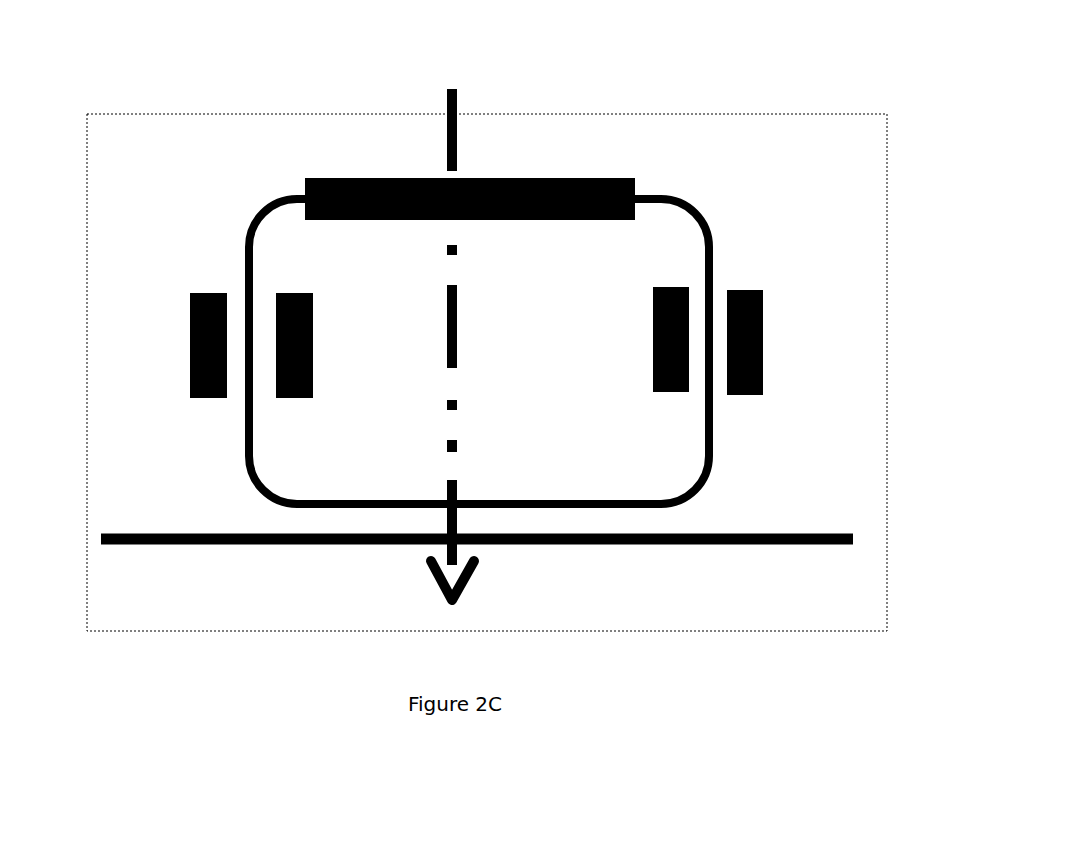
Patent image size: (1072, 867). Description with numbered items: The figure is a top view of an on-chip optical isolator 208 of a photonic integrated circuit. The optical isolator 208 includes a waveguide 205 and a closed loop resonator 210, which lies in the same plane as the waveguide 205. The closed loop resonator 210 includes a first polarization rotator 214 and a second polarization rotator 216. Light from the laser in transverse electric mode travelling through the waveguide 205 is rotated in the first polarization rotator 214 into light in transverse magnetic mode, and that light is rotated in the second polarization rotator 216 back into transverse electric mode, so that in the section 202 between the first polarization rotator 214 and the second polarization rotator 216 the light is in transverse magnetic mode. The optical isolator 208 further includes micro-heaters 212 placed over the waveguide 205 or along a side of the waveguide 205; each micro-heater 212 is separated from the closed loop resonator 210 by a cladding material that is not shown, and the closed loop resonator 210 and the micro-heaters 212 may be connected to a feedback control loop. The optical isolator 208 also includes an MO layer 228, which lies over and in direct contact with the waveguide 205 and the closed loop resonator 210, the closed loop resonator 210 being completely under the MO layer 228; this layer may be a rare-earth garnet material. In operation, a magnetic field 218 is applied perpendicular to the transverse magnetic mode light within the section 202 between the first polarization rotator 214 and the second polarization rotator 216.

The section 202 is at (477, 193).
The waveguide 205 is at (853, 537).
The on-chip optical isolator 208 is at (887, 283).
The closed loop resonator 210 is at (712, 455).
The micro-heaters 212 is at (227, 362).
The first polarization rotator 214 is at (355, 178).
The second polarization rotator 216 is at (635, 178).
The magnetic field 218 is at (456, 568).
The MO layer 228 is at (207, 166).